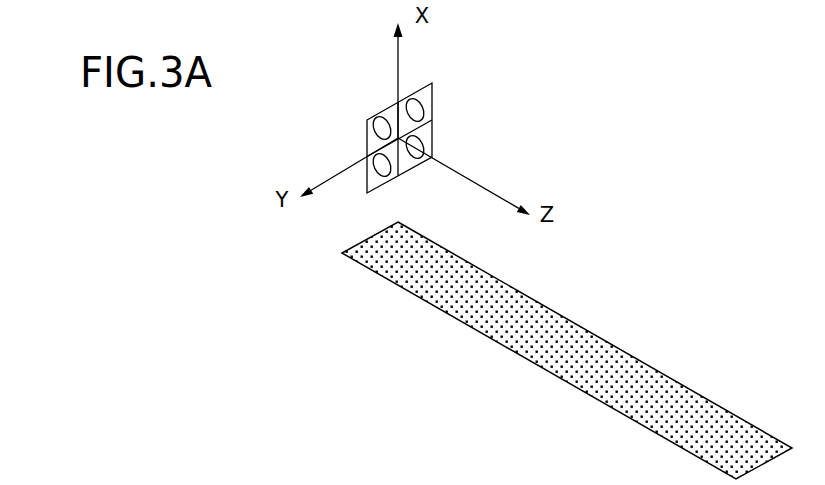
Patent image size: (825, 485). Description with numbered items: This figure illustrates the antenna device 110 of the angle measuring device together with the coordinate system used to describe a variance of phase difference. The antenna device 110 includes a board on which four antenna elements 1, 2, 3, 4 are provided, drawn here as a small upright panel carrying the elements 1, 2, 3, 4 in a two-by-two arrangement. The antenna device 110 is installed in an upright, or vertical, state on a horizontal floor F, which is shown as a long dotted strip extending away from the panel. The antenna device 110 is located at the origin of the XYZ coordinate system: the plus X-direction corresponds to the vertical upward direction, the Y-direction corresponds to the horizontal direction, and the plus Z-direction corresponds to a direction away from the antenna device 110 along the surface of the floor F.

The antenna element 1 is at (414, 150).
The antenna element 2 is at (416, 109).
The antenna element 3 is at (381, 167).
The antenna element 4 is at (367, 130).
The antenna device 110 is at (432, 120).
The floor F is at (725, 410).